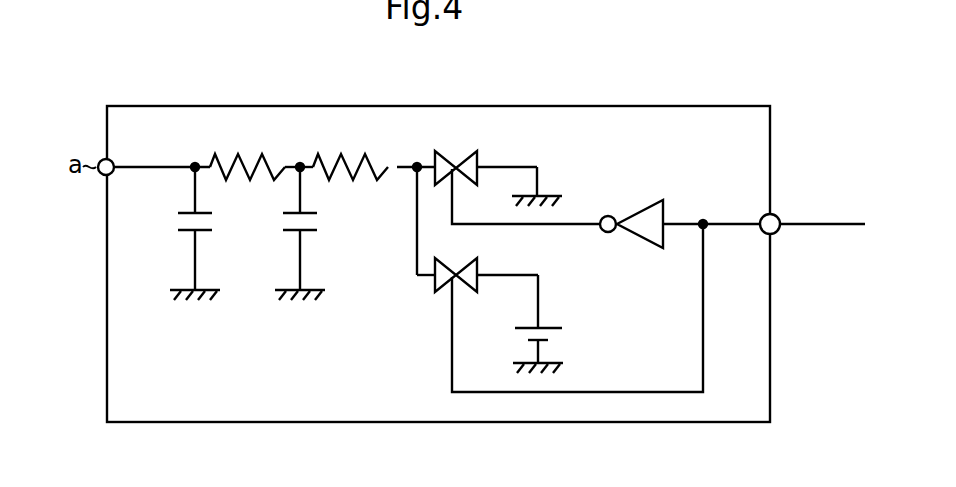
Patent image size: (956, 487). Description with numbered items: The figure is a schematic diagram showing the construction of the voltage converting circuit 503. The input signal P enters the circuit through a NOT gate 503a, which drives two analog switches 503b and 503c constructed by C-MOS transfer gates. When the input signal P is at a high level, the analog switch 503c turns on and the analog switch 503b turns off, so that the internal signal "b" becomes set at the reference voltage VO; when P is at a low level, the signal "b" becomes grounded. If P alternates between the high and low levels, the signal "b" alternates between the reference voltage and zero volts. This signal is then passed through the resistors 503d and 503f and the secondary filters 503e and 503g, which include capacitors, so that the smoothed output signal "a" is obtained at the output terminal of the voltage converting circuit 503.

The voltage converting circuit 503 is at (770, 363).
The NOT gate 503a is at (662, 197).
The analog switch 503b is at (480, 158).
The analog switch 503c is at (480, 270).
The resistor 503d is at (340, 155).
The secondary filter 503e is at (320, 213).
The resistor 503f is at (236, 155).
The secondary filter 503g is at (215, 213).